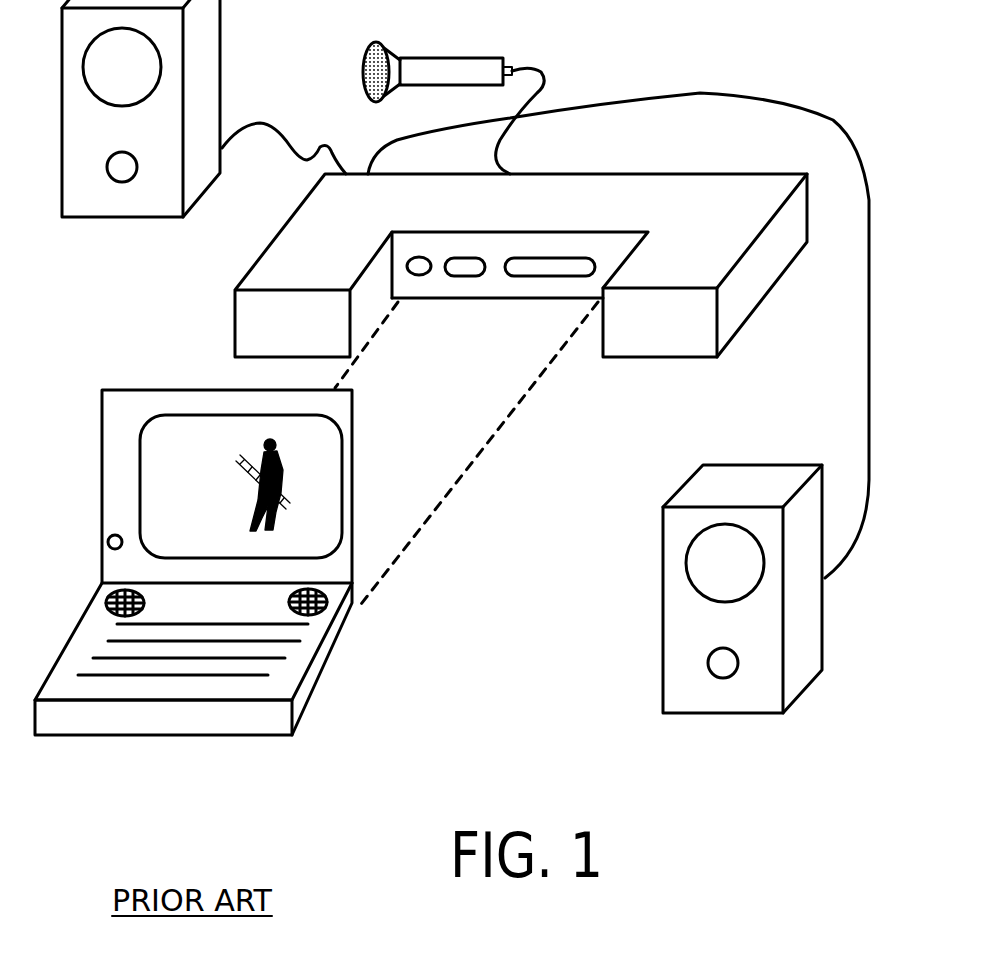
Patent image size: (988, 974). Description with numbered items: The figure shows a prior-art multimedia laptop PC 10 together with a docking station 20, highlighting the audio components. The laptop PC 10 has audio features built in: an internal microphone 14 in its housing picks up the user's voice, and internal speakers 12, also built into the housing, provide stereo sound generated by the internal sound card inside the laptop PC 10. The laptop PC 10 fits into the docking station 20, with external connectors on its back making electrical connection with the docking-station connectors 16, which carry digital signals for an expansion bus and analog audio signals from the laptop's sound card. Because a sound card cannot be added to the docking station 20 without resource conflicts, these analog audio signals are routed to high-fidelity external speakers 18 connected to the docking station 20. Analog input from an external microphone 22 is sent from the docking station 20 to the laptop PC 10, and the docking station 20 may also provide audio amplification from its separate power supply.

The laptop PC 10 is at (322, 675).
The internal speakers 12 is at (106, 606).
The internal microphone 14 is at (108, 542).
The docking-station connectors 16 is at (522, 277).
The external speakers 18 is at (100, 206).
The docking station 20 is at (748, 229).
The external microphone 22 is at (457, 58).